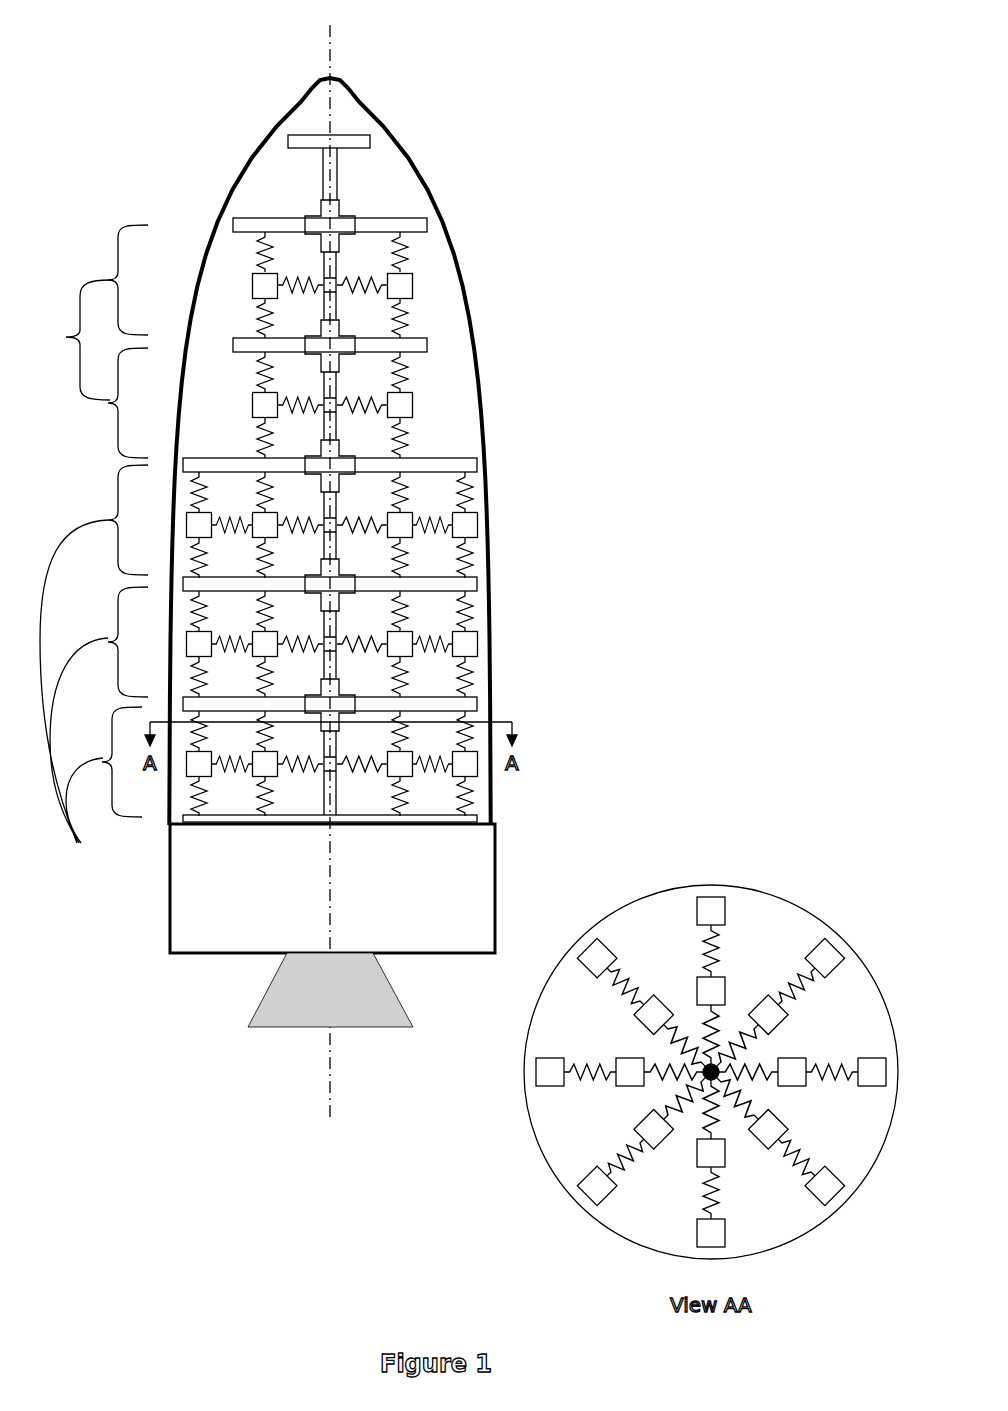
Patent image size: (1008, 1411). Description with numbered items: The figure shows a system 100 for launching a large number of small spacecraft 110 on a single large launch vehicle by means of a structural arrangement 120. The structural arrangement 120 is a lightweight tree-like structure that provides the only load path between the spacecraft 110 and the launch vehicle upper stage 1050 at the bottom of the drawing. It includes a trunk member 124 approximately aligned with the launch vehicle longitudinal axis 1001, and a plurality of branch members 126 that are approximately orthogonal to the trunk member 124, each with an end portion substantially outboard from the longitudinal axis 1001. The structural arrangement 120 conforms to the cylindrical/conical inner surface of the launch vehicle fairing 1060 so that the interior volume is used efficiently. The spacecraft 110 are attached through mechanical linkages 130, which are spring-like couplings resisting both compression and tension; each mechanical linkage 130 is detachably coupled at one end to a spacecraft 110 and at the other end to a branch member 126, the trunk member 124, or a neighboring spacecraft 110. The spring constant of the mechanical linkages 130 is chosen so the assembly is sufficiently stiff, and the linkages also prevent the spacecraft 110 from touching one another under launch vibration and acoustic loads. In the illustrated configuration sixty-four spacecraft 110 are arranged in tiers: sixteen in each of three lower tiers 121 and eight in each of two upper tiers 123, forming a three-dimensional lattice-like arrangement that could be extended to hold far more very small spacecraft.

The system 100 is at (244, 25).
The launch vehicle longitudinal axis 1001 is at (335, 50).
The launch vehicle fairing 1060 is at (422, 150).
The trunk member 124 is at (338, 165).
The structural arrangement 120 is at (256, 203).
The upper tiers 123 is at (89, 341).
The mechanical linkages 130 is at (405, 322).
The branch members 126 is at (477, 458).
The small spacecraft 110 is at (460, 642).
The lower tiers 121 is at (94, 673).
The launch vehicle upper stage 1050 is at (497, 857).